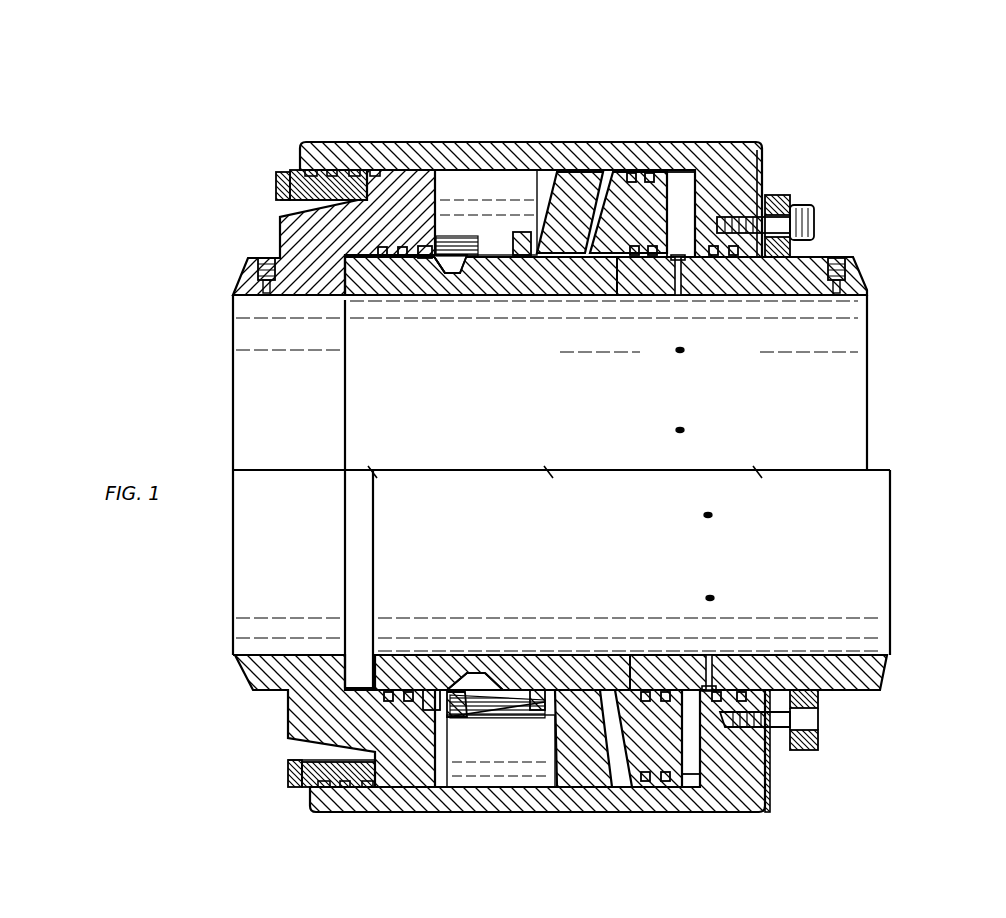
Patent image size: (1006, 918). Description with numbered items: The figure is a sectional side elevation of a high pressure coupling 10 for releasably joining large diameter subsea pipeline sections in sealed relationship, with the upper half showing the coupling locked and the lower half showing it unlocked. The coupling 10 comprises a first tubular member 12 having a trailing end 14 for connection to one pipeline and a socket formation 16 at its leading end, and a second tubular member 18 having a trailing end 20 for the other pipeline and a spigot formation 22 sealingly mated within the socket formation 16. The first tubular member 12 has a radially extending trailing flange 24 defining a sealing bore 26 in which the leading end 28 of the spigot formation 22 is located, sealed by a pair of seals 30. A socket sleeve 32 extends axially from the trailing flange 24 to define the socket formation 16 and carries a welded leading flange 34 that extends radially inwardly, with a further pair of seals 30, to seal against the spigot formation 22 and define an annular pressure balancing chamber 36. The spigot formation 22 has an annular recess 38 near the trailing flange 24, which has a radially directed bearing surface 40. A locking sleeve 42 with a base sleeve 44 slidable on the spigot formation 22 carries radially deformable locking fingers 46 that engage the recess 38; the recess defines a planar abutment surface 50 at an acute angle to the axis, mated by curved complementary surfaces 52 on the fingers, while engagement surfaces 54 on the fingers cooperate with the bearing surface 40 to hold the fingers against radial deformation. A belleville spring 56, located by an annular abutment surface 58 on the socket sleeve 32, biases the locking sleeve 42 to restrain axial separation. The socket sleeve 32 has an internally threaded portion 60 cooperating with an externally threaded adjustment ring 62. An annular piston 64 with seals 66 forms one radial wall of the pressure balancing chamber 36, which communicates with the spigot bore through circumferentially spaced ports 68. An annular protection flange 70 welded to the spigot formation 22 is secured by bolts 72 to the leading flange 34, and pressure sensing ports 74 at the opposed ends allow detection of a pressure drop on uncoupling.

The high pressure coupling 10 is at (946, 186).
The first tubular member 12 is at (268, 734).
The trailing end 14 is at (236, 658).
The socket formation 16 is at (650, 140).
The second tubular member 18 is at (845, 692).
The trailing end 20 is at (869, 290).
The spigot formation 22 is at (866, 645).
The trailing flange 24 is at (414, 775).
The sealing bore 26 is at (358, 685).
The leading end 28 is at (370, 685).
The seals 30 is at (403, 258).
The socket sleeve 32 is at (488, 158).
The leading flange 34 is at (758, 183).
The annular pressure balancing chamber 36 is at (693, 174).
The annular recess 38 is at (496, 680).
The bearing surface 40 is at (428, 689).
The locking sleeve 42 is at (495, 236).
The base sleeve 44 is at (522, 259).
The locking fingers 46 is at (461, 240).
The annular abutment surface 50 is at (450, 265).
The complementary surfaces 52 is at (447, 268).
The engagement surfaces 54 is at (450, 714).
The belleville spring 56 is at (571, 185).
The annular abutment surface 58 is at (626, 790).
The internally threaded portion 60 is at (373, 172).
The adjustment ring 62 is at (274, 178).
The annular piston 64 is at (617, 297).
The seals 66 is at (648, 173).
The ports 68 is at (724, 352).
The protection flange 70 is at (791, 212).
The bolts 72 is at (816, 230).
The pressure sensing ports 74 is at (258, 263).